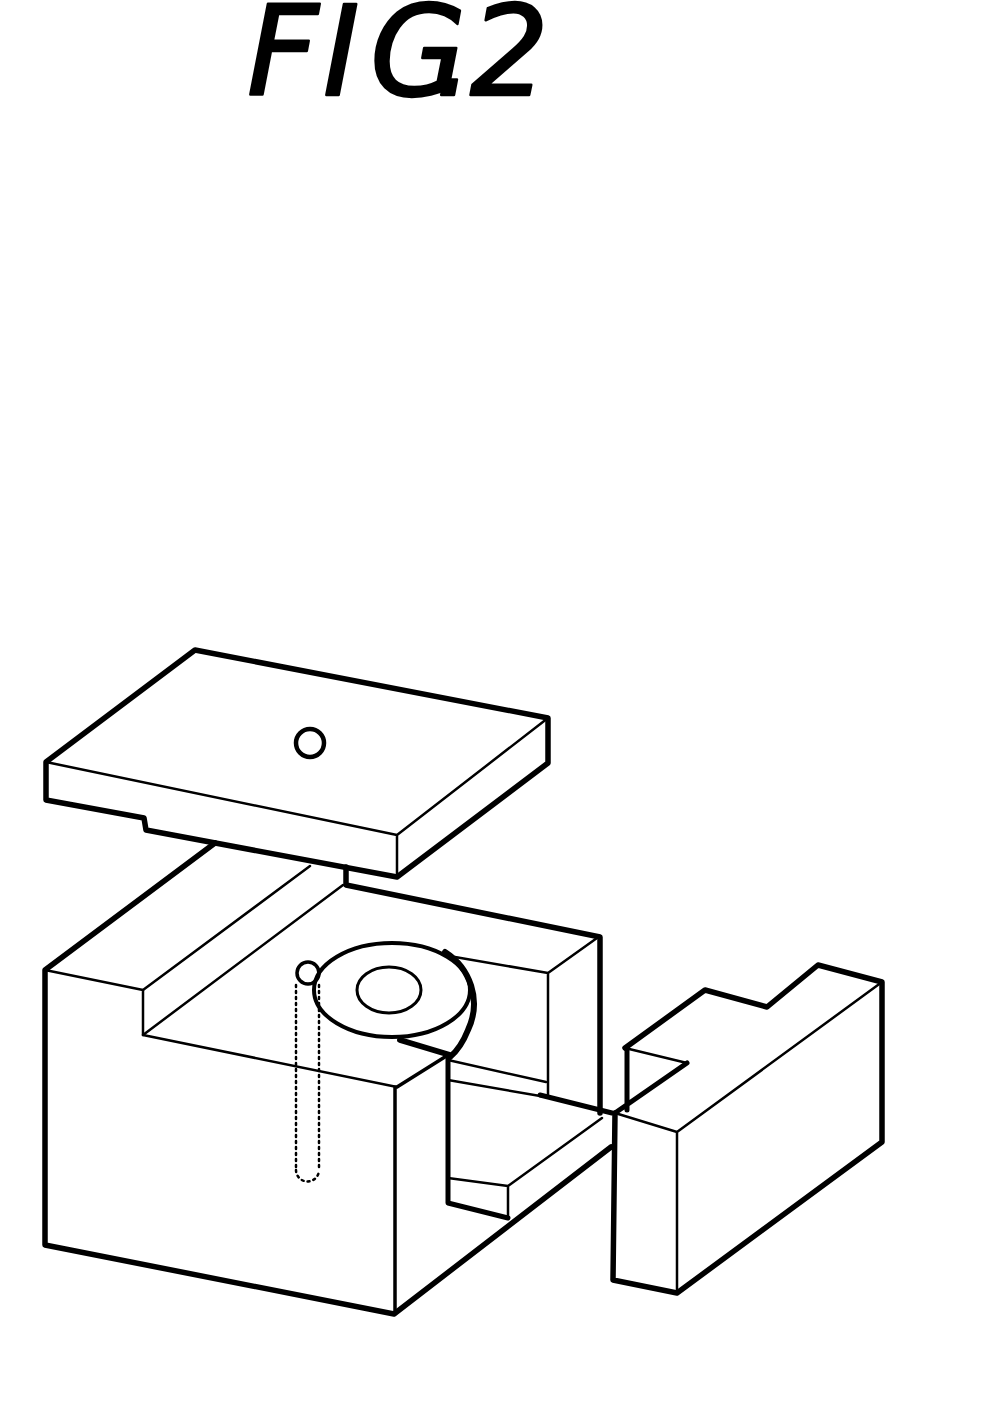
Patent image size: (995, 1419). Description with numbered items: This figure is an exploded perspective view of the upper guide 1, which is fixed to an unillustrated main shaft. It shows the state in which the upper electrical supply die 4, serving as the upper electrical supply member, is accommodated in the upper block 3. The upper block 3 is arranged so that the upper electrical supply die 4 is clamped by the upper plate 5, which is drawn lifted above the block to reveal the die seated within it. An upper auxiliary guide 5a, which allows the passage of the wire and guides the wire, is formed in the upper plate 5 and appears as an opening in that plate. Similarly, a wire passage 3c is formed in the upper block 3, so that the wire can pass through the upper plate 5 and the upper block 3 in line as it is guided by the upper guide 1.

The upper guide 1 is at (688, 720).
The upper block 3 is at (548, 943).
The wire passage 3c is at (297, 977).
The upper electrical supply die 4 is at (370, 956).
The upper plate 5 is at (458, 747).
The upper auxiliary guide 5a is at (308, 745).